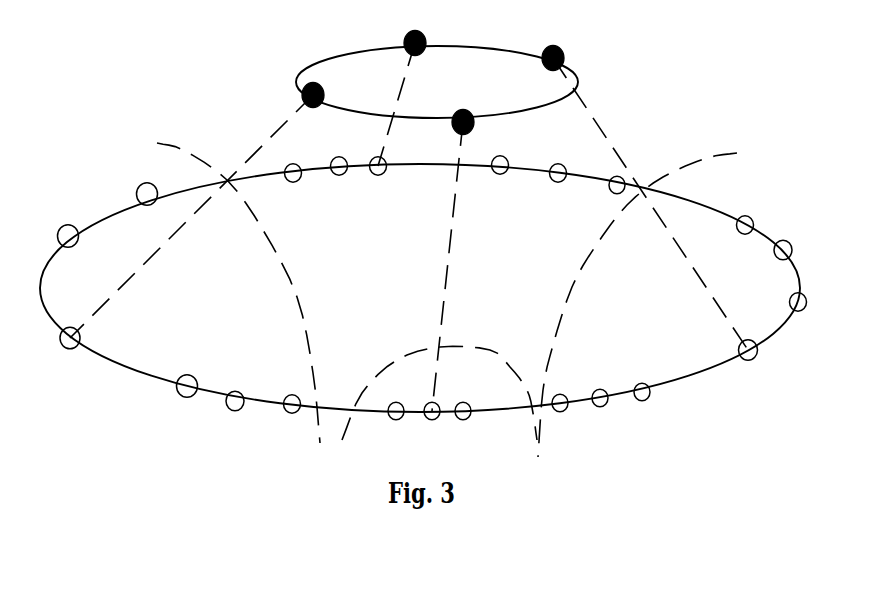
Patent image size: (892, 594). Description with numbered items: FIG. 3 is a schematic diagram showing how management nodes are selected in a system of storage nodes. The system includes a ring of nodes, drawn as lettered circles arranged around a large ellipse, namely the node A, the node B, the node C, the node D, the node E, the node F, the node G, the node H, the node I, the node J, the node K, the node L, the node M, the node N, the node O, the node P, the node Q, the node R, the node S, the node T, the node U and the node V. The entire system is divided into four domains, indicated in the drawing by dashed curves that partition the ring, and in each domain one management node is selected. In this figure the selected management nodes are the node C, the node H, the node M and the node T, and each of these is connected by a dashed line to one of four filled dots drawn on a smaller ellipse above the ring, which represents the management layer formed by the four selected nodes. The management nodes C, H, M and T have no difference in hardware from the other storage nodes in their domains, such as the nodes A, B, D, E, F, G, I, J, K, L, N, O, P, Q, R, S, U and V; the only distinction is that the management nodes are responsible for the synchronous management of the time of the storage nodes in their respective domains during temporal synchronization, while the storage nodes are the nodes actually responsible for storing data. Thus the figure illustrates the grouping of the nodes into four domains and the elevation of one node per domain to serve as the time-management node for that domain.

The node A is at (147, 194).
The node B is at (68, 236).
The management node C is at (70, 338).
The node D is at (187, 386).
The node E is at (235, 401).
The node F is at (292, 404).
The node G is at (396, 411).
The management node H is at (432, 411).
The node I is at (463, 411).
The node J is at (560, 403).
The node K is at (600, 398).
The node L is at (642, 392).
The management node M is at (748, 350).
The node N is at (798, 302).
The node O is at (783, 250).
The node P is at (745, 225).
The node Q is at (617, 185).
The node R is at (558, 173).
The node S is at (500, 165).
The management node T is at (378, 166).
The node U is at (339, 166).
The node V is at (293, 173).